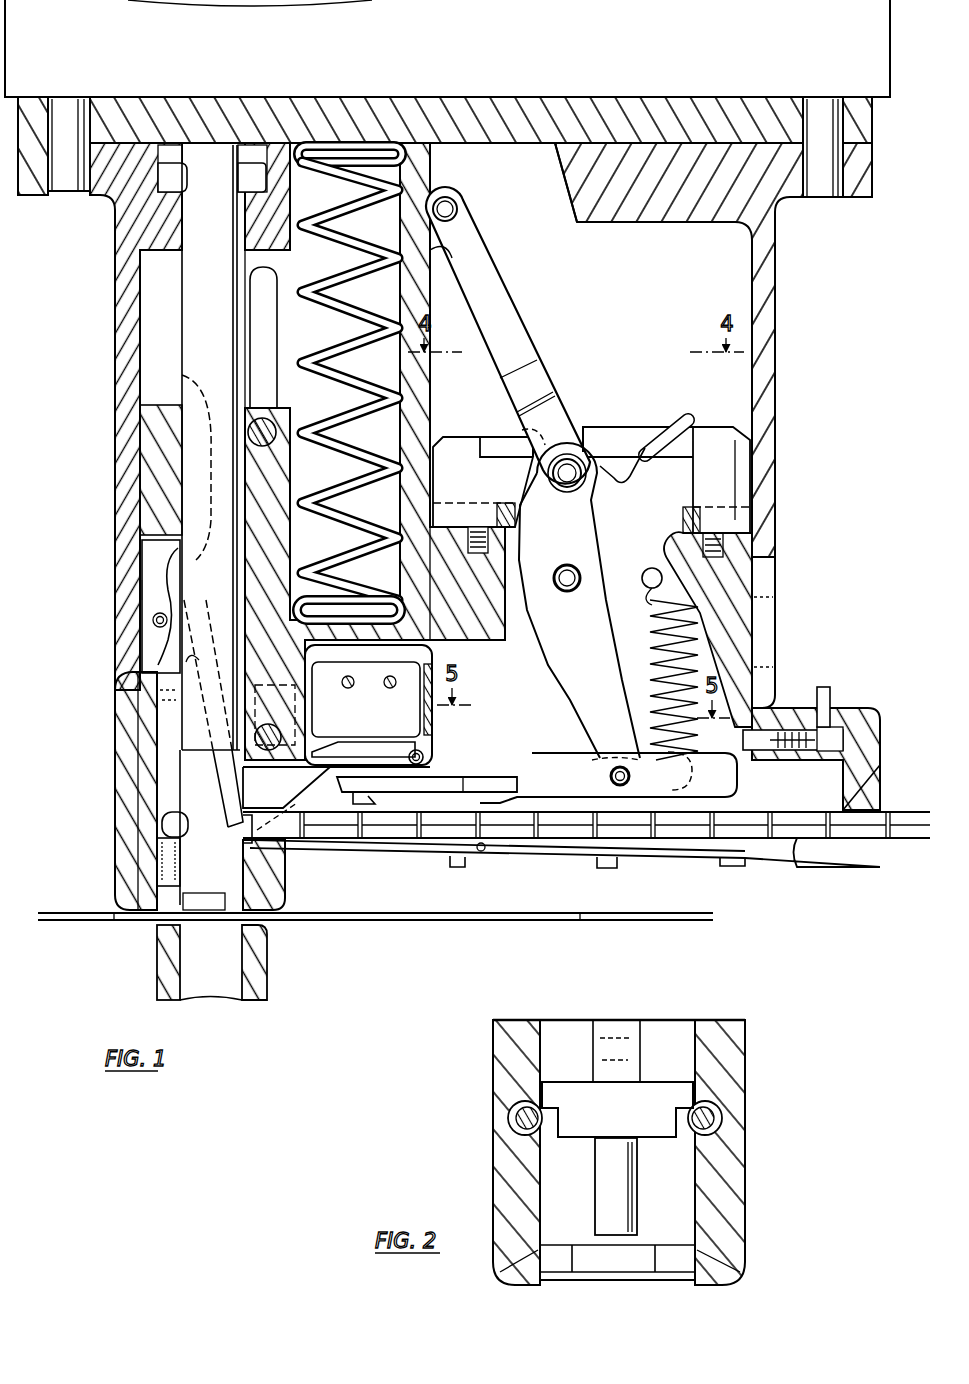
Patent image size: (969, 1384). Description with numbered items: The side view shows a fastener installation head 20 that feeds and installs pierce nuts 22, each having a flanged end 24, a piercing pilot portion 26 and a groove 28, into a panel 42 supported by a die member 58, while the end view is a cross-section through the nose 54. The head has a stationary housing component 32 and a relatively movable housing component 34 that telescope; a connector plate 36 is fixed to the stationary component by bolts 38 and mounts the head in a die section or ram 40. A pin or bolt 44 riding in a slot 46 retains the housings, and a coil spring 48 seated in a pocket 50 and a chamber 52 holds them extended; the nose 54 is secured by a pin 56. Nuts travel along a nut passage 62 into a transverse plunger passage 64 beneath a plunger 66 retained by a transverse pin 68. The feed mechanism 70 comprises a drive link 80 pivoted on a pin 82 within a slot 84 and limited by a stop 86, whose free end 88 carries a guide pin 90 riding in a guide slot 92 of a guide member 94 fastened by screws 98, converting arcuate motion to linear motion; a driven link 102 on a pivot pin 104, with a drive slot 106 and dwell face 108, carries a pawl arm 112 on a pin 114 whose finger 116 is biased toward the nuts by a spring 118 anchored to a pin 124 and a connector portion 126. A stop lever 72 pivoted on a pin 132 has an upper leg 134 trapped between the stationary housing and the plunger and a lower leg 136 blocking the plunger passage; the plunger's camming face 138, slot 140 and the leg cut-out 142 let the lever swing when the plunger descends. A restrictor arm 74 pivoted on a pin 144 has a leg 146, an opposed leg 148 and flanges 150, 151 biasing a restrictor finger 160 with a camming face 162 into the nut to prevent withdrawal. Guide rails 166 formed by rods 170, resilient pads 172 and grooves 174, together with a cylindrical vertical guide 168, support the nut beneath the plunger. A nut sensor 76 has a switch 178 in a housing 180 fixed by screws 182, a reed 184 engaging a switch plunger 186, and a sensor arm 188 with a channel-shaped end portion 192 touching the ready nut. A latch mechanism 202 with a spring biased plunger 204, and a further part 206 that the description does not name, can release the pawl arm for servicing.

In FIG. 1, the fastener installation head 20 is at (96, 500).
In FIG. 1, the pierce nuts 22 is at (326, 833).
In FIG. 2, the pierce nuts 22 is at (566, 1090).
In FIG. 1, the flanged end 24 is at (790, 822).
In FIG. 2, the flanged end 24 is at (672, 1090).
In FIG. 1, the piercing pilot portion 26 is at (792, 862).
In FIG. 2, the piercing pilot portion 26 is at (573, 1140).
In FIG. 2, the groove 28 is at (672, 1128).
In FIG. 1, the stationary housing component 32 is at (122, 302).
In FIG. 1, the relatively moving housing component 34 is at (453, 622).
In FIG. 1, the connector plate 36 is at (160, 103).
In FIG. 1, the bolts 38 is at (65, 105).
In FIG. 1, the die section or ram 40 is at (606, 51).
In FIG. 1, the panel 42 is at (380, 919).
In FIG. 1, the pin or bolt 44 is at (268, 420).
In FIG. 1, the slot 46 is at (272, 331).
In FIG. 1, the coil spring 48 is at (366, 392).
In FIG. 1, the pocket 50 is at (290, 188).
In FIG. 1, the pocket or chamber 52 is at (290, 470).
In FIG. 1, the nose 54 is at (146, 743).
In FIG. 1, the bolt or pin 56 is at (262, 733).
In FIG. 1, the die member 58 is at (166, 960).
In FIG. 1, the nut passage 62 is at (516, 796).
In FIG. 1, the plunger passage 64 is at (246, 882).
In FIG. 1, the plunger 66 is at (199, 307).
In FIG. 1, the transverse pin 68 is at (245, 176).
In FIG. 1, the feed mechanism 70 is at (600, 338).
In FIG. 1, the stop lever 72 is at (140, 608).
In FIG. 1, the restrictor arm 74 is at (540, 856).
In FIG. 1, the nut sensor 76 is at (444, 725).
In FIG. 1, the drive link 80 is at (516, 318).
In FIG. 1, the pin 82 is at (458, 204).
In FIG. 1, the slot 84 is at (570, 196).
In FIG. 1, the stop 86 is at (448, 256).
In FIG. 1, the free end 88 is at (563, 428).
In FIG. 1, the guide pin 90 is at (578, 480).
In FIG. 1, the guide slot 92 is at (705, 452).
In FIG. 1, the guide member 94 is at (740, 448).
In FIG. 1, the screws 98 is at (470, 540).
In FIG. 1, the driven or feed link 102 is at (570, 690).
In FIG. 1, the pivot pin 104 is at (572, 589).
In FIG. 1, the drive slot 106 is at (580, 490).
In FIG. 1, the dwell face 108 is at (648, 426).
In FIG. 1, the pawl arm 112 is at (556, 770).
In FIG. 1, the pin 114 is at (618, 768).
In FIG. 1, the projecting finger 116 is at (372, 804).
In FIG. 1, the spring 118 is at (648, 662).
In FIG. 1, the pin 124 is at (664, 578).
In FIG. 1, the connector portion 126 is at (642, 771).
In FIG. 1, the pin 132 is at (152, 624).
In FIG. 1, the upper lever leg 134 is at (150, 556).
In FIG. 1, the lower leg 136 is at (165, 785).
In FIG. 1, the camming face 138 is at (194, 656).
In FIG. 1, the cut-out or slot 140 is at (152, 465).
In FIG. 1, the cut-out 142 is at (102, 585).
In FIG. 1, the pin 144 is at (193, 538).
In FIG. 1, the leg 146 is at (396, 849).
In FIG. 1, the opposed leg 148 is at (667, 856).
In FIG. 1, the laterally extending flange 150 is at (736, 860).
In FIG. 1, the laterally extending flange 151 is at (456, 868).
In FIG. 1, the restrictor finger 160 is at (245, 838).
In FIG. 1, the camming face 162 is at (297, 803).
In FIG. 1, the guide rails 166 is at (170, 819).
In FIG. 2, the guide rails 166 is at (730, 1108).
In FIG. 1, the vertical guide 168 is at (160, 855).
In FIG. 2, the vertical guide 168 is at (625, 1183).
In FIG. 2, the horizontal pins or rods 170 is at (512, 1120).
In FIG. 2, the resilient pads 172 is at (512, 1110).
In FIG. 2, the circular grooves 174 is at (520, 1136).
In FIG. 1, the switch 178 is at (347, 678).
In FIG. 1, the housing 180 is at (431, 672).
In FIG. 1, the screws 182 is at (389, 678).
In FIG. 1, the switch arm or reed 184 is at (350, 744).
In FIG. 1, the switch plunger 186 is at (412, 738).
In FIG. 1, the sensor arm 188 is at (428, 764).
In FIG. 1, the channel-shaped end portion 192 is at (255, 799).
In FIG. 1, the latch mechanism 202 is at (842, 688).
In FIG. 1, the spring biased plunger 204 is at (845, 742).
In FIG. 1, the clamp pin 206 is at (816, 700).